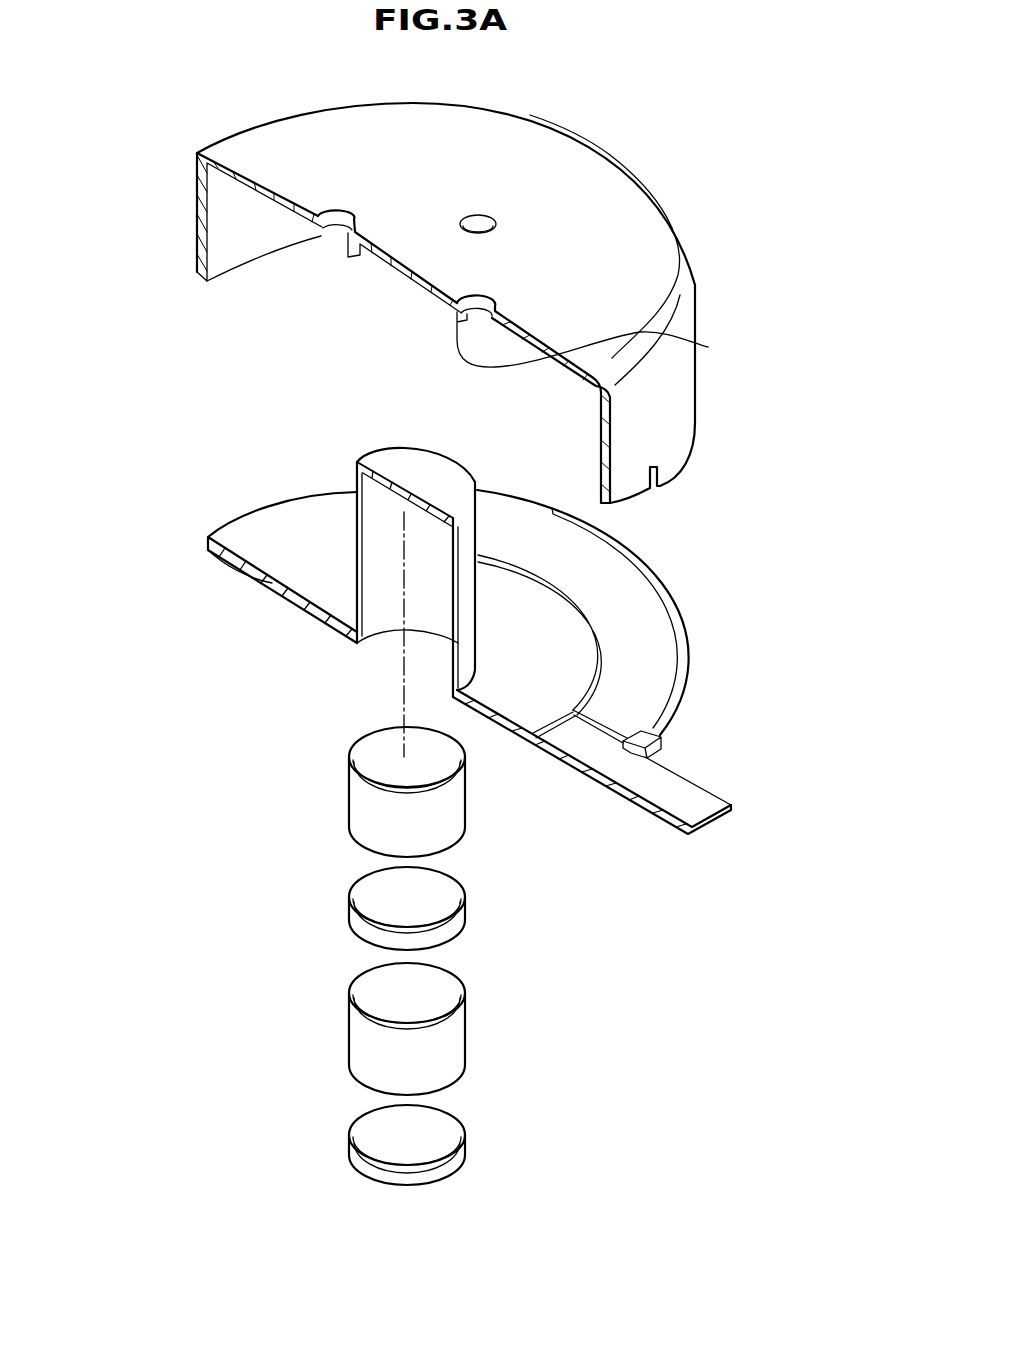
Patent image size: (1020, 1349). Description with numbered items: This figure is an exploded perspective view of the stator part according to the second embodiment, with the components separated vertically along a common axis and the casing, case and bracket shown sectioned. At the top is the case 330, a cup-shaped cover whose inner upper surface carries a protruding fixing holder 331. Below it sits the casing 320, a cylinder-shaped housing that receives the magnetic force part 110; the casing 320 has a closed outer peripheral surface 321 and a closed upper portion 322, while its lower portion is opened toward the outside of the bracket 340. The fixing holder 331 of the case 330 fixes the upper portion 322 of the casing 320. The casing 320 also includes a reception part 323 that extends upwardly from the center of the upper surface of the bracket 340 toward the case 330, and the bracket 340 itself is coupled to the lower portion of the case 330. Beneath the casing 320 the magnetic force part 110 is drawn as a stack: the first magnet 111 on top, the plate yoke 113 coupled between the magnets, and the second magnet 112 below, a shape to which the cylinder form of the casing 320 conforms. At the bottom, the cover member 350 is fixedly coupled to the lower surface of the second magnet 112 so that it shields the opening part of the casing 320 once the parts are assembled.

The magnetic force part 110 is at (314, 911).
The first magnet 111 is at (363, 805).
The second magnet 112 is at (350, 1029).
The plate yoke 113 is at (363, 897).
The casing 320 is at (275, 599).
The outer peripheral surface 321 is at (362, 495).
The upper portion 322 is at (377, 462).
The reception part 323 is at (391, 573).
The case 330 is at (677, 395).
The fixing holder 331 is at (604, 345).
The bracket 340 is at (677, 647).
The cover member 350 is at (363, 1137).